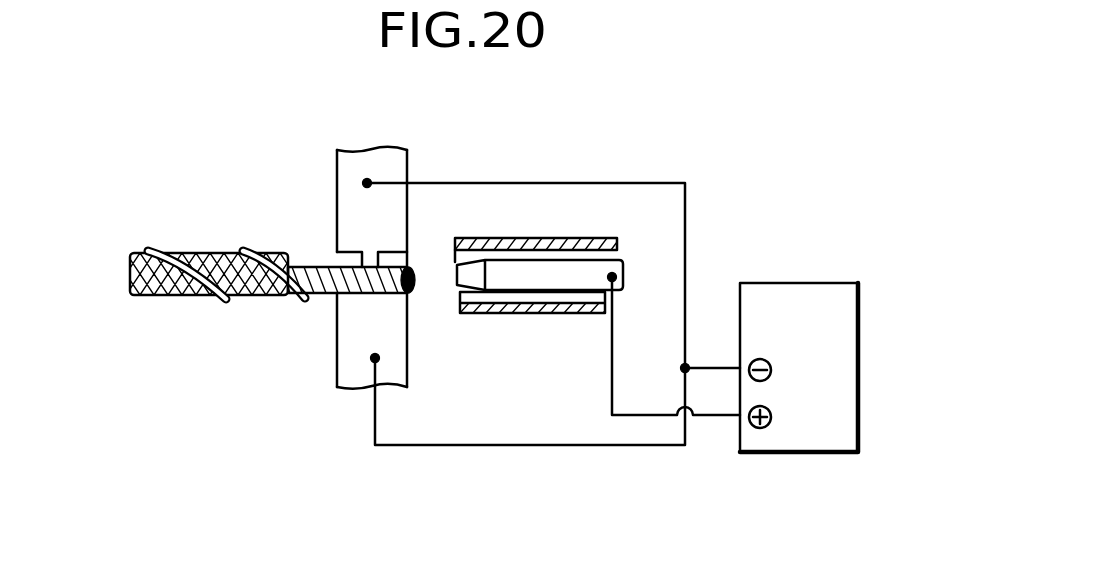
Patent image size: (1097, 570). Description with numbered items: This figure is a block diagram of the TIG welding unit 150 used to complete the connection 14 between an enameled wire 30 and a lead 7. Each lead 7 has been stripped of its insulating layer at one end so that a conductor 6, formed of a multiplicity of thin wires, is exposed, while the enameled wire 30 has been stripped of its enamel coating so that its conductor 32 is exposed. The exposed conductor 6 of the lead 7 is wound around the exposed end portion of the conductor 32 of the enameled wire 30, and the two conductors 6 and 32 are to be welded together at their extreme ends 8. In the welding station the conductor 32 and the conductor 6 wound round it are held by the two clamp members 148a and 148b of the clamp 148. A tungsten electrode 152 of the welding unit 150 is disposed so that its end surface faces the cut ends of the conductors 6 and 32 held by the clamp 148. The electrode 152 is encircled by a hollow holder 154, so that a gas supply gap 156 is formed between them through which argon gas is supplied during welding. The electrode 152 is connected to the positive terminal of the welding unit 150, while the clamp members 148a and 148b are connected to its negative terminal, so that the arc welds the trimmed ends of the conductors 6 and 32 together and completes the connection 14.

The conductor 6 is at (308, 265).
The lead 7 is at (204, 253).
The extreme ends 8 is at (417, 275).
The connection 14 is at (350, 260).
The enameled wire 30 is at (200, 297).
The conductor 32 is at (277, 297).
The clamp 148 is at (336, 349).
The clamp member 148a is at (337, 190).
The clamp member 148b is at (350, 368).
The TIG welding unit 150 is at (826, 283).
The tungsten electrode 152 is at (457, 278).
The hollow holder 154 is at (553, 313).
The gas supply gap 156 is at (617, 257).